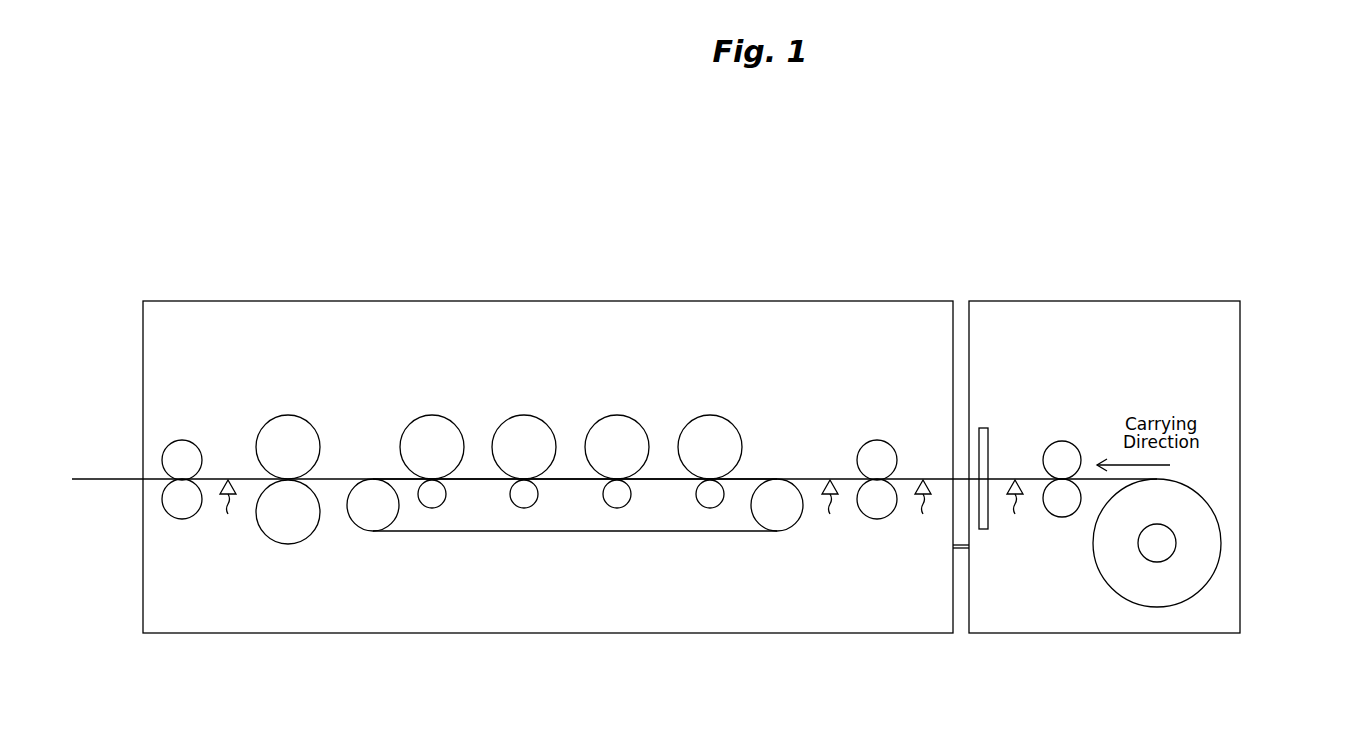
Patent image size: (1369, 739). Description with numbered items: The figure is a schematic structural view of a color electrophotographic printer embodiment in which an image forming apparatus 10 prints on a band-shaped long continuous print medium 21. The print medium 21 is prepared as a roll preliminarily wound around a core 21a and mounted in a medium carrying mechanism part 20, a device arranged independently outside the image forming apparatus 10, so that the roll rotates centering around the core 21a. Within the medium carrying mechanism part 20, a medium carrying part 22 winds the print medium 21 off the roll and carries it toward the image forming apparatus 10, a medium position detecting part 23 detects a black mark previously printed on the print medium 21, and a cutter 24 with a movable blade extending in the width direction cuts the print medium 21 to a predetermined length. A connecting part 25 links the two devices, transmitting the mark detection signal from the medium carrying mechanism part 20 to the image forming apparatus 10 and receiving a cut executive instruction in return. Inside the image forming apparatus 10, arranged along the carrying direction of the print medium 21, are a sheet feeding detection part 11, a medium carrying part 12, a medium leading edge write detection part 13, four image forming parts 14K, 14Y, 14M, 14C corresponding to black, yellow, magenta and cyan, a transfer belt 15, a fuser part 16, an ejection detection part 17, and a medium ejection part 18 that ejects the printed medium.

The image forming apparatus 10 is at (220, 300).
The sheet feeding detection part 11 is at (923, 509).
The medium carrying part 12 is at (897, 452).
The medium leading edge write detection part 13 is at (830, 509).
The image forming part 14C is at (455, 422).
The image forming part 14M is at (547, 422).
The image forming part 14Y is at (640, 422).
The image forming part 14K is at (733, 422).
The transfer belt 15 is at (570, 532).
The fuser part 16 is at (311, 423).
The ejection detection part 17 is at (228, 509).
The medium ejection part 18 is at (190, 443).
The medium carrying mechanism part 20 is at (983, 300).
The print medium 21 is at (810, 478).
The core 21a is at (1176, 537).
The medium carrying part 22 is at (1070, 443).
The medium position detecting part 23 is at (1015, 509).
The cutter 24 is at (985, 428).
The connecting part 25 is at (958, 550).